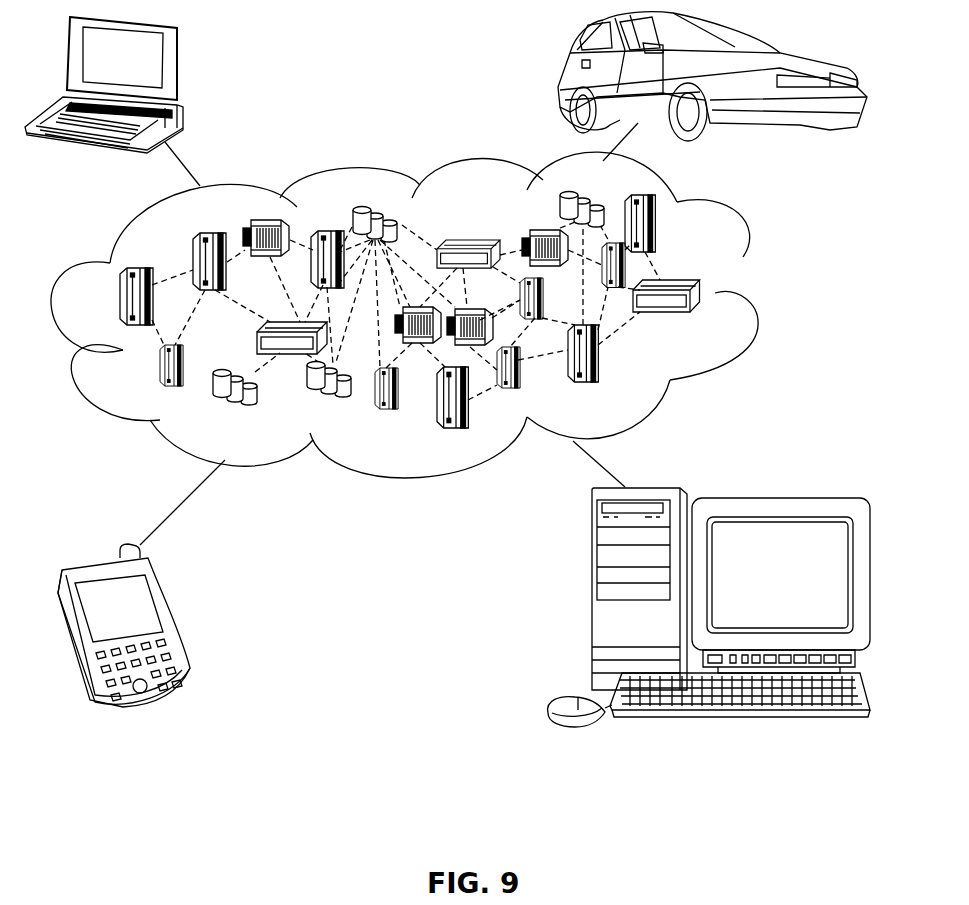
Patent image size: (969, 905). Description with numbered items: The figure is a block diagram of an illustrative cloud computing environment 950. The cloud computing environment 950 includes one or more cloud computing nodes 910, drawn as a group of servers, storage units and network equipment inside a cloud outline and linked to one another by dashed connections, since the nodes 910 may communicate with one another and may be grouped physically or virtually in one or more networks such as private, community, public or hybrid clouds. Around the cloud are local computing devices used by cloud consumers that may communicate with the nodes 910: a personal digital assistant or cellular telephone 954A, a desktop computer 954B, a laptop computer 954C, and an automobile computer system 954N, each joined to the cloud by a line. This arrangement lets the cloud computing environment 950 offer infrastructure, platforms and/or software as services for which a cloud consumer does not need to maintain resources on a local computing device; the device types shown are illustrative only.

The cloud computing nodes 910 is at (722, 318).
The cloud computing environment 950 is at (745, 258).
The personal digital assistant (PDA) or cellular telephone 954A is at (173, 621).
The desktop computer 954B is at (592, 597).
The laptop computer 954C is at (177, 62).
The automobile computer system 954N is at (565, 68).